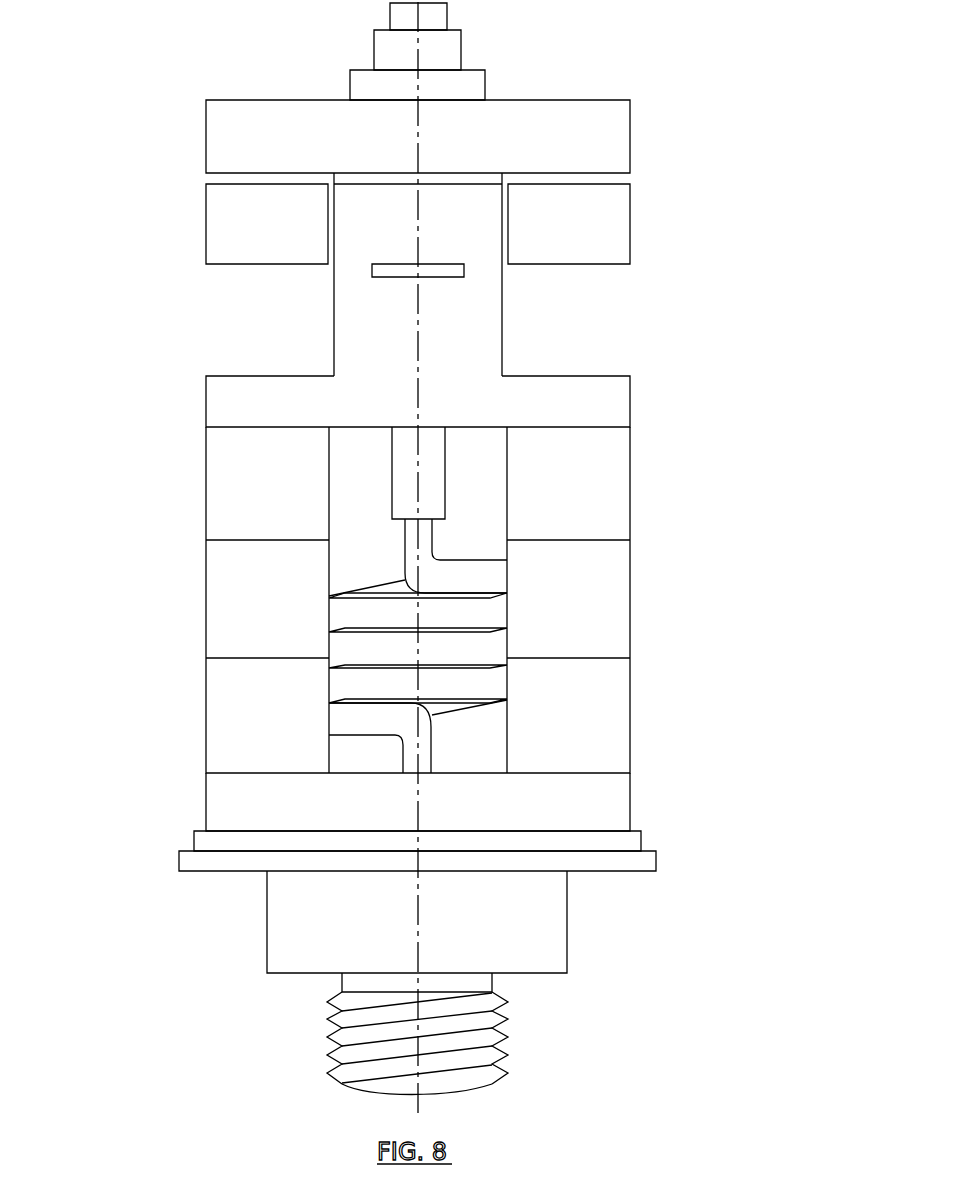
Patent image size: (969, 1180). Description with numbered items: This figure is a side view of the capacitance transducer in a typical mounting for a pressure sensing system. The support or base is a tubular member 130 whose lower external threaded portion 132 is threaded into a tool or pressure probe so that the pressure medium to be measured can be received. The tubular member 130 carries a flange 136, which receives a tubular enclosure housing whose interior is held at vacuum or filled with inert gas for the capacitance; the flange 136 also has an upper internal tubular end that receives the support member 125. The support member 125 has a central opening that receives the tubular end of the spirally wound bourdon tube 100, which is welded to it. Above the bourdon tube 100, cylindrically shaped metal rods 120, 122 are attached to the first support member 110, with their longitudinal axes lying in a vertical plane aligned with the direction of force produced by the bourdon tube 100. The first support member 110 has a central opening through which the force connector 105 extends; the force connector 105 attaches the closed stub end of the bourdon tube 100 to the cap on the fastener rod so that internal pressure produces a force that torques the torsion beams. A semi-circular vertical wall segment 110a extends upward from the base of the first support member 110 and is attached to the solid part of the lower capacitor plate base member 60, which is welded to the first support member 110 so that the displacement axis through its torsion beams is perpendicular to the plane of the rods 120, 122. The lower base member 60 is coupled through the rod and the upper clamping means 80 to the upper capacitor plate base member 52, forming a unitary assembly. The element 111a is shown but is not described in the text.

The upper clamping means 80 is at (470, 52).
The upper capacitor plate base member 52 is at (630, 143).
The lower capacitor plate base member 60 is at (630, 232).
The collar 111a is at (447, 275).
The vertical wall segment 110a is at (502, 349).
The first support member 110 is at (630, 403).
The force connector 105 is at (435, 485).
The bourdon tube 100 is at (358, 617).
The cylindrically shaped rod 120 is at (206, 725).
The cylindrically shaped rod 122 is at (630, 717).
The support member 125 is at (630, 795).
The flange 136 is at (655, 858).
The tubular member 130 is at (567, 943).
The external threaded portion 132 is at (508, 1055).